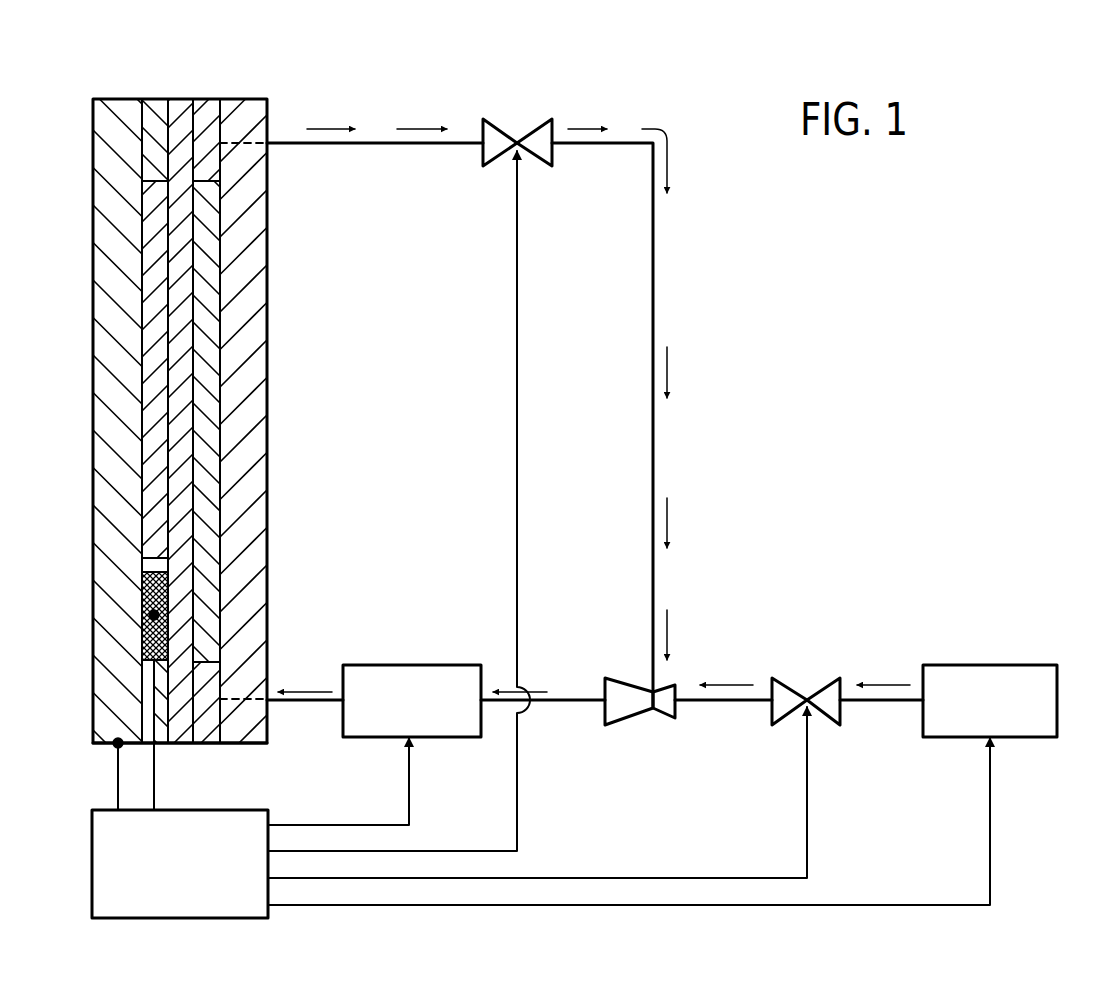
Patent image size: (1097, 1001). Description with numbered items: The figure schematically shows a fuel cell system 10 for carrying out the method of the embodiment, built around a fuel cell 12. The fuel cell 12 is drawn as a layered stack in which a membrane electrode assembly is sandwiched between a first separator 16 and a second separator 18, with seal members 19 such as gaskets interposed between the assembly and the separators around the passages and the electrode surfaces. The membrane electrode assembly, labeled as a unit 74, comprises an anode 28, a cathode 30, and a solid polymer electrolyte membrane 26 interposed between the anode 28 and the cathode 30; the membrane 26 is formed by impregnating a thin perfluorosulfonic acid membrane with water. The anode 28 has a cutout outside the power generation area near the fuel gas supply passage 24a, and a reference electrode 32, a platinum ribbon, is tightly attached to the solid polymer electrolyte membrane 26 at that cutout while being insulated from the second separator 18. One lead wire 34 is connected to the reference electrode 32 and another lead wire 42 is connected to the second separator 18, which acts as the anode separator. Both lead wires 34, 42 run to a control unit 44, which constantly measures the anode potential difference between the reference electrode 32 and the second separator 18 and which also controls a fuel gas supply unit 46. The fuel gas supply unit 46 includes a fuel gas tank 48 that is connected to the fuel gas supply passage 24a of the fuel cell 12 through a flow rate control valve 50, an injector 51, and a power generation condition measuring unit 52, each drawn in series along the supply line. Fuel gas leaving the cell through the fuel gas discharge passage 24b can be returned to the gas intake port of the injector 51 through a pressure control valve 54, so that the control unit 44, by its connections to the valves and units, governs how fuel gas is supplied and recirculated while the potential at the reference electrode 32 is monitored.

The fuel cell system 10 is at (418, 80).
The fuel cell 12 is at (220, 58).
The first separator 16 is at (246, 108).
The second separator 18 is at (118, 99).
The seal member 19 is at (143, 705).
The fuel gas supply passage 24a is at (267, 690).
The fuel gas discharge passage 24b is at (267, 143).
The solid polymer electrolyte membrane 26 is at (180, 300).
The anode 28 is at (155, 282).
The cathode 30 is at (205, 325).
The reference electrode 32 is at (145, 589).
The lead wire 34 is at (157, 780).
The lead wire 42 is at (116, 780).
The control unit 44 is at (242, 810).
The fuel gas supply unit 46 is at (1030, 658).
The fuel gas tank 48 is at (942, 665).
The flow rate control valve 50 is at (815, 688).
The injector 51 is at (633, 718).
The power generation condition measuring unit 52 is at (463, 665).
The pressure control valve 54 is at (526, 128).
The membrane electrode assembly 74 is at (322, 265).